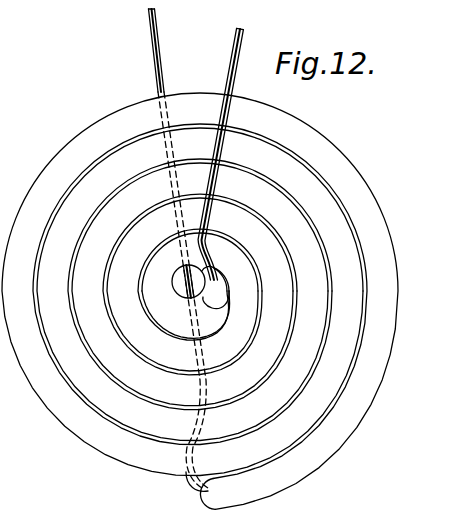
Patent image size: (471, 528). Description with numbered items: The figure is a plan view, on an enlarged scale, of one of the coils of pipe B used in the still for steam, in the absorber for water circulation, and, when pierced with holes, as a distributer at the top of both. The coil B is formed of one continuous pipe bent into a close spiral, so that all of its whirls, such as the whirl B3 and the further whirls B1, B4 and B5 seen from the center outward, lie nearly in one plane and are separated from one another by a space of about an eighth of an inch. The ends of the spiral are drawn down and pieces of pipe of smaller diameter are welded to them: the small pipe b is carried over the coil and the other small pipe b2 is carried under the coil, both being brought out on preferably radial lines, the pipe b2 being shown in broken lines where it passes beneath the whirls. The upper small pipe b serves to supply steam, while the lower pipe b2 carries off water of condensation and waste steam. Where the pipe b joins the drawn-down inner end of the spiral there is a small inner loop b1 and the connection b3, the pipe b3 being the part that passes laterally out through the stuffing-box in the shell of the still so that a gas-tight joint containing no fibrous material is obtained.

The coil of pipe B is at (200, 267).
The first convolution of spiral coil tube B1 is at (197, 313).
The whirl of the coil B3 is at (200, 284).
The fourth convolution of spiral coil tube B4 is at (200, 284).
The fifth convolution of spiral coil tube B5 is at (200, 284).
The small pipe b is at (239, 75).
The inner loop of coil tube b1 is at (188, 281).
The small pipe b2 is at (179, 250).
The pipe b3 is at (213, 288).